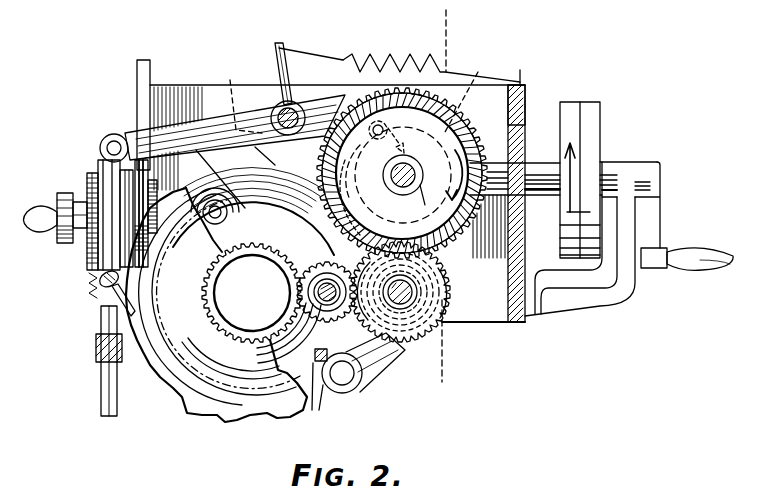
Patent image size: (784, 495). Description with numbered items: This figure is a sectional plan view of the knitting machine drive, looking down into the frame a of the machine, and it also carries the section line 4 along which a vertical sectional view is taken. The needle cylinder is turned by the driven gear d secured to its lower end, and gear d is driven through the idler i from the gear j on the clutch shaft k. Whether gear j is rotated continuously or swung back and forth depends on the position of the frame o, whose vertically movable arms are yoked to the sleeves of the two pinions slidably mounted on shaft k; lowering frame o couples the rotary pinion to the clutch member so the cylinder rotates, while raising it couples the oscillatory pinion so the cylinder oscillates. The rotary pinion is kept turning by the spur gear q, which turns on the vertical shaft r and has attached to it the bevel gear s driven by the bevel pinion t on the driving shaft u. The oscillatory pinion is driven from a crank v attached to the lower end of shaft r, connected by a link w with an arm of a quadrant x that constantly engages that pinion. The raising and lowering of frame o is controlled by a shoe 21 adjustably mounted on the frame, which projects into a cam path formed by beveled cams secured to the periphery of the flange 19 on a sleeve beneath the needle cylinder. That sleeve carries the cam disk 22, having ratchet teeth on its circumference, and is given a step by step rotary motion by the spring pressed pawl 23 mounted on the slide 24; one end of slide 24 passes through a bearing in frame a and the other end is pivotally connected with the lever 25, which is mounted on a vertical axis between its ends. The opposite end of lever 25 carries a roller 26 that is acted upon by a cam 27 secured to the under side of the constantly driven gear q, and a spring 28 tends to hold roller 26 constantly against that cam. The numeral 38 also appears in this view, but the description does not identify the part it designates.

The section line 4— 4 is at (457, 199).
The flange 19 is at (140, 130).
The shoe 21 is at (313, 410).
The cam disk 22 is at (210, 393).
The spring pressed pawl 23 is at (104, 298).
The slide 24 is at (105, 235).
The lever 25 is at (170, 127).
The roller 26 is at (469, 94).
The cam 27 is at (518, 70).
The spring 28 is at (394, 60).
The handwheel 38 is at (92, 176).
The frame a is at (97, 348).
The driven gear d is at (215, 293).
The idler i is at (298, 296).
The gear j is at (438, 303).
The clutch shaft k is at (413, 289).
The frame o is at (358, 395).
The spur gear q is at (525, 122).
The vertical shaft r is at (441, 188).
The bevel gear s is at (473, 143).
The bevel pinion t is at (525, 162).
The driving shaft u is at (663, 184).
The crank v is at (395, 137).
The link w is at (240, 94).
The quadrant x is at (298, 89).